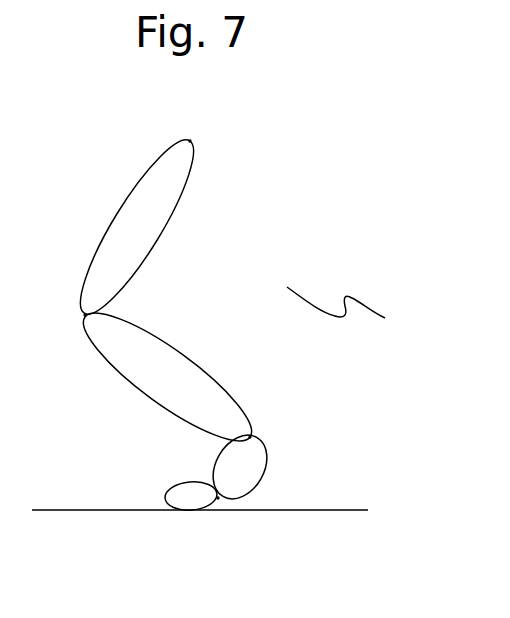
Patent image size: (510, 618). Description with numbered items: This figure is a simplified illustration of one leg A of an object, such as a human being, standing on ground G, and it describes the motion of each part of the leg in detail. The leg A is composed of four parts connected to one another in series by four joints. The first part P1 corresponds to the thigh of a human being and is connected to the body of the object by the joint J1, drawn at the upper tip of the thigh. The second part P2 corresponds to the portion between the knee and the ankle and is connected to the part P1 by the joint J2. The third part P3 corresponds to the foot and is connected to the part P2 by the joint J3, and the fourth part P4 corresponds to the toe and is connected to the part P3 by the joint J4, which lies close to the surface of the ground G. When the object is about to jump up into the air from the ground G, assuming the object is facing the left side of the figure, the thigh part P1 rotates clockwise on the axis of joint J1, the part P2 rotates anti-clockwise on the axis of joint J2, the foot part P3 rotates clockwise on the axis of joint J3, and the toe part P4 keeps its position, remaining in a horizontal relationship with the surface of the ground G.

The thigh part P1 is at (124, 200).
The knee-to-ankle part P2 is at (110, 363).
The foot part P3 is at (212, 473).
The toe part P4 is at (188, 500).
The first joint J1 is at (196, 139).
The second joint J2 is at (88, 314).
The third joint J3 is at (250, 438).
The fourth joint J4 is at (218, 498).
The ground G is at (200, 537).
The leg A is at (346, 320).